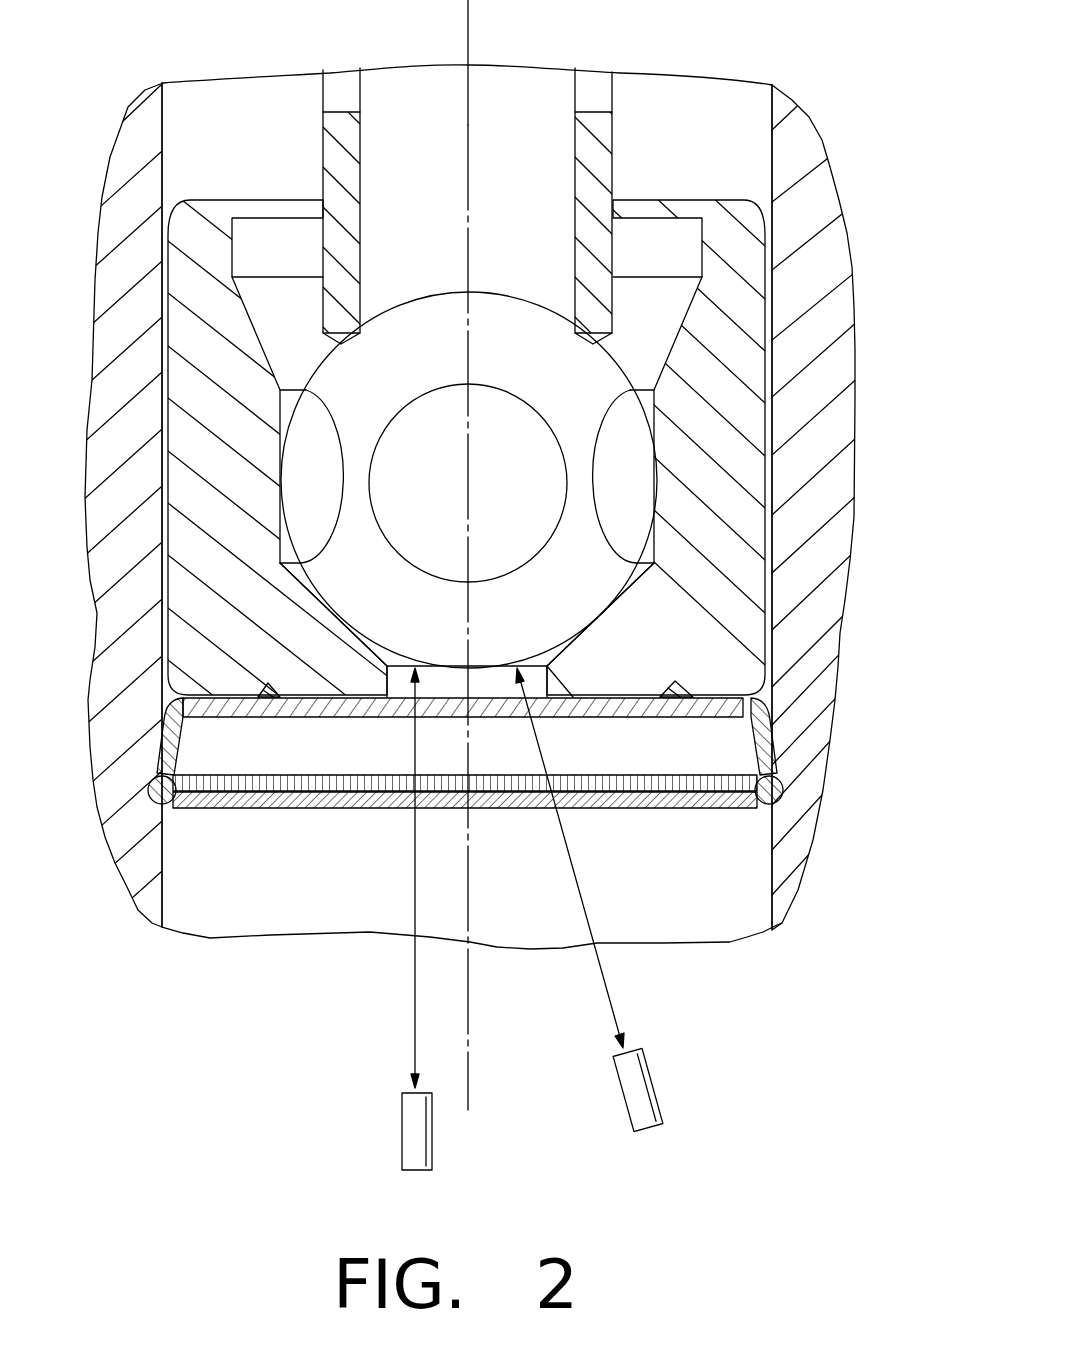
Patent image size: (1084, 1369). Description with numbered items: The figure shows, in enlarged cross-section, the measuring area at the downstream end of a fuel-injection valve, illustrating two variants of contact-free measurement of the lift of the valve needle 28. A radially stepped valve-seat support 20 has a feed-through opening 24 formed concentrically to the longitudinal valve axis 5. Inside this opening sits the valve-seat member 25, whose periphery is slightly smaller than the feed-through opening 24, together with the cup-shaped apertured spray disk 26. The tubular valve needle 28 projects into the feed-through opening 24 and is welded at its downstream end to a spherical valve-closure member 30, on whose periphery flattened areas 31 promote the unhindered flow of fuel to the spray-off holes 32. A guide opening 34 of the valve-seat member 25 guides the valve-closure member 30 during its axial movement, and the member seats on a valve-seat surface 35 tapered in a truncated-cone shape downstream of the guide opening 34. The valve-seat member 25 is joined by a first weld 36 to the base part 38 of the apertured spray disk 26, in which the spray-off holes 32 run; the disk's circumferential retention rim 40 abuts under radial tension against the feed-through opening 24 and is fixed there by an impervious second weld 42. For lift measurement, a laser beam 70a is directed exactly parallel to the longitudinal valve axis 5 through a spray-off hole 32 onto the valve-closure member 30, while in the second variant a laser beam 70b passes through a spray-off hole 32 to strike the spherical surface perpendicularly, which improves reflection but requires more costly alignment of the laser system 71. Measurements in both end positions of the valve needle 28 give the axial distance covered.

The longitudinal valve axis 5 is at (472, 38).
The valve-seat support 20 is at (822, 208).
The feed-through opening 24 is at (771, 146).
The valve-seat member 25 is at (728, 497).
The apertured spray disk 26 is at (758, 712).
The valve needle 28 is at (593, 150).
The valve-closure member 30 is at (527, 340).
The flattened areas 31 is at (610, 467).
The spray-off holes 32 is at (408, 708).
The guide opening 34 is at (692, 287).
The valve-seat surface 35 is at (598, 617).
The first weld 36 is at (695, 700).
The base part 38 is at (617, 710).
The retention rim 40 is at (778, 756).
The second weld 42 is at (786, 795).
The laser beam 70a is at (413, 988).
The laser beam 70b is at (614, 1013).
The laser system 71 is at (405, 1136).